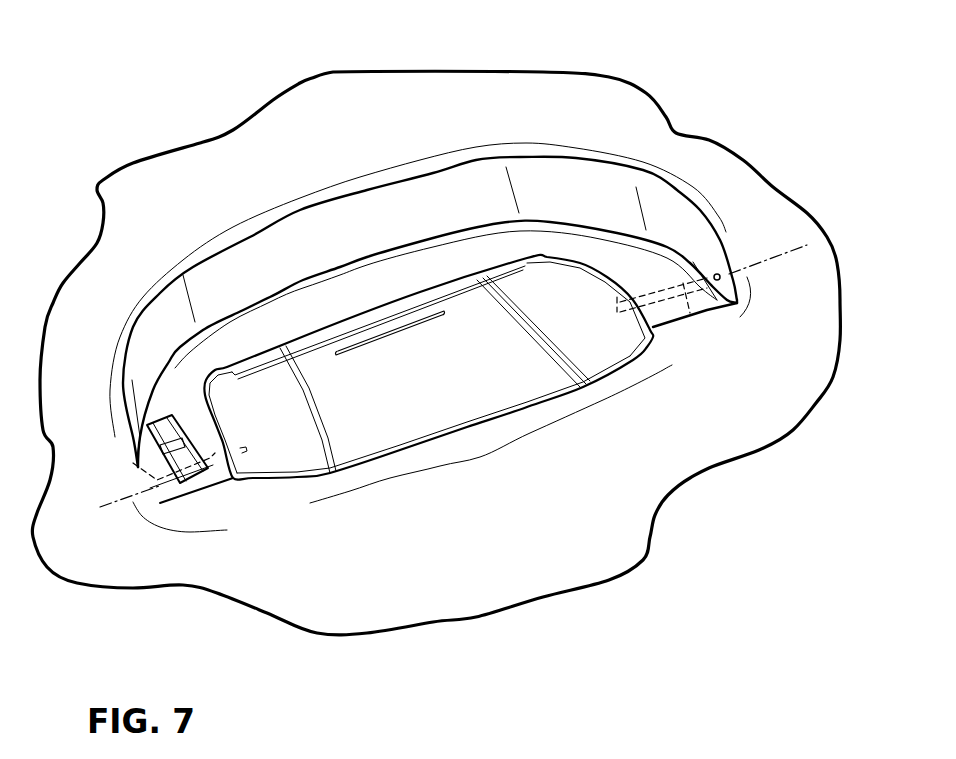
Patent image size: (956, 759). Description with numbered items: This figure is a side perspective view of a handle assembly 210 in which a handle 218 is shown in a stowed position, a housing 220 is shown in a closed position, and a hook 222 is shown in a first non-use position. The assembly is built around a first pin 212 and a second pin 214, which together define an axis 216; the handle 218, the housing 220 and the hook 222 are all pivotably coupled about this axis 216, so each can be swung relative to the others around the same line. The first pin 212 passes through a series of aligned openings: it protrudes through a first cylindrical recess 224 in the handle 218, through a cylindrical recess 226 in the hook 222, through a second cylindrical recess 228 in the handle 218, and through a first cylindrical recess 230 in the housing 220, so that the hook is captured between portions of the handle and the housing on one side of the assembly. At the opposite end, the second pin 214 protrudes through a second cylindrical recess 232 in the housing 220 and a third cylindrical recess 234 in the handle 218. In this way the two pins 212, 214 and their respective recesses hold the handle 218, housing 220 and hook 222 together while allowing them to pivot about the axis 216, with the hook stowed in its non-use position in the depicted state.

The handle assembly 210 is at (240, 200).
The first pin 212 is at (215, 467).
The second pin 214 is at (690, 267).
The axis 216 is at (763, 260).
The handle 218 is at (453, 200).
The housing 220 is at (500, 373).
The hook 222 is at (153, 425).
The first cylindrical recess in the handle 224 is at (153, 480).
The cylindrical recess in the hook 226 is at (200, 437).
The second cylindrical recess in the handle 228 is at (210, 450).
The first cylindrical recess in the housing 230 is at (243, 450).
The second cylindrical recess in the housing 232 is at (618, 312).
The third cylindrical recess in the handle 234 is at (690, 267).